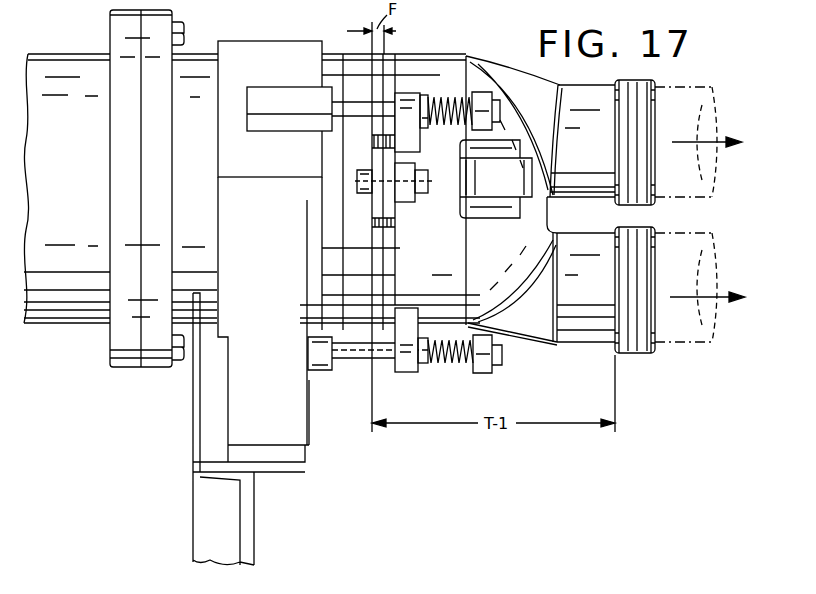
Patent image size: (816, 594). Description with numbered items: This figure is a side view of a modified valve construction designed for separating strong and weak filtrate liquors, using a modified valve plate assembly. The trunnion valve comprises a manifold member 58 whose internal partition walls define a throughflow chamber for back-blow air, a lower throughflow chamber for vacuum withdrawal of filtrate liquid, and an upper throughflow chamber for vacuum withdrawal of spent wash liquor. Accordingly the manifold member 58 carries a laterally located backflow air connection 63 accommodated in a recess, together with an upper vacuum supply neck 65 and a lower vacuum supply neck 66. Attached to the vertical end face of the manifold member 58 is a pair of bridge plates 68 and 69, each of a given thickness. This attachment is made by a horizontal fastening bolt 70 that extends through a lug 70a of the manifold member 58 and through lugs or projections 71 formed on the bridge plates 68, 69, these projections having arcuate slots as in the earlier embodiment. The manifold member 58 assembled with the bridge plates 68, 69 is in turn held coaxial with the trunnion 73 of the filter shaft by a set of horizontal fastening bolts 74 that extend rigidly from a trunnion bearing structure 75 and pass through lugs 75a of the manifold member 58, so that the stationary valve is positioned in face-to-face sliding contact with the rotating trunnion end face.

The manifold member 58 is at (507, 261).
The backflow air connection 63 is at (528, 176).
The upper vacuum supply neck 65 is at (599, 139).
The lower vacuum supply neck 66 is at (599, 295).
The bridge plate 68 is at (380, 54).
The bridge plate 69 is at (392, 56).
The horizontal fastening bolt 70 is at (420, 192).
The lug 70a is at (407, 202).
The lugs or projections 71 is at (372, 207).
The trunnion 73 is at (338, 53).
The horizontal fastening bolts 74 is at (336, 104).
The trunnion bearing structure 75 is at (287, 73).
The lugs 75a is at (400, 372).